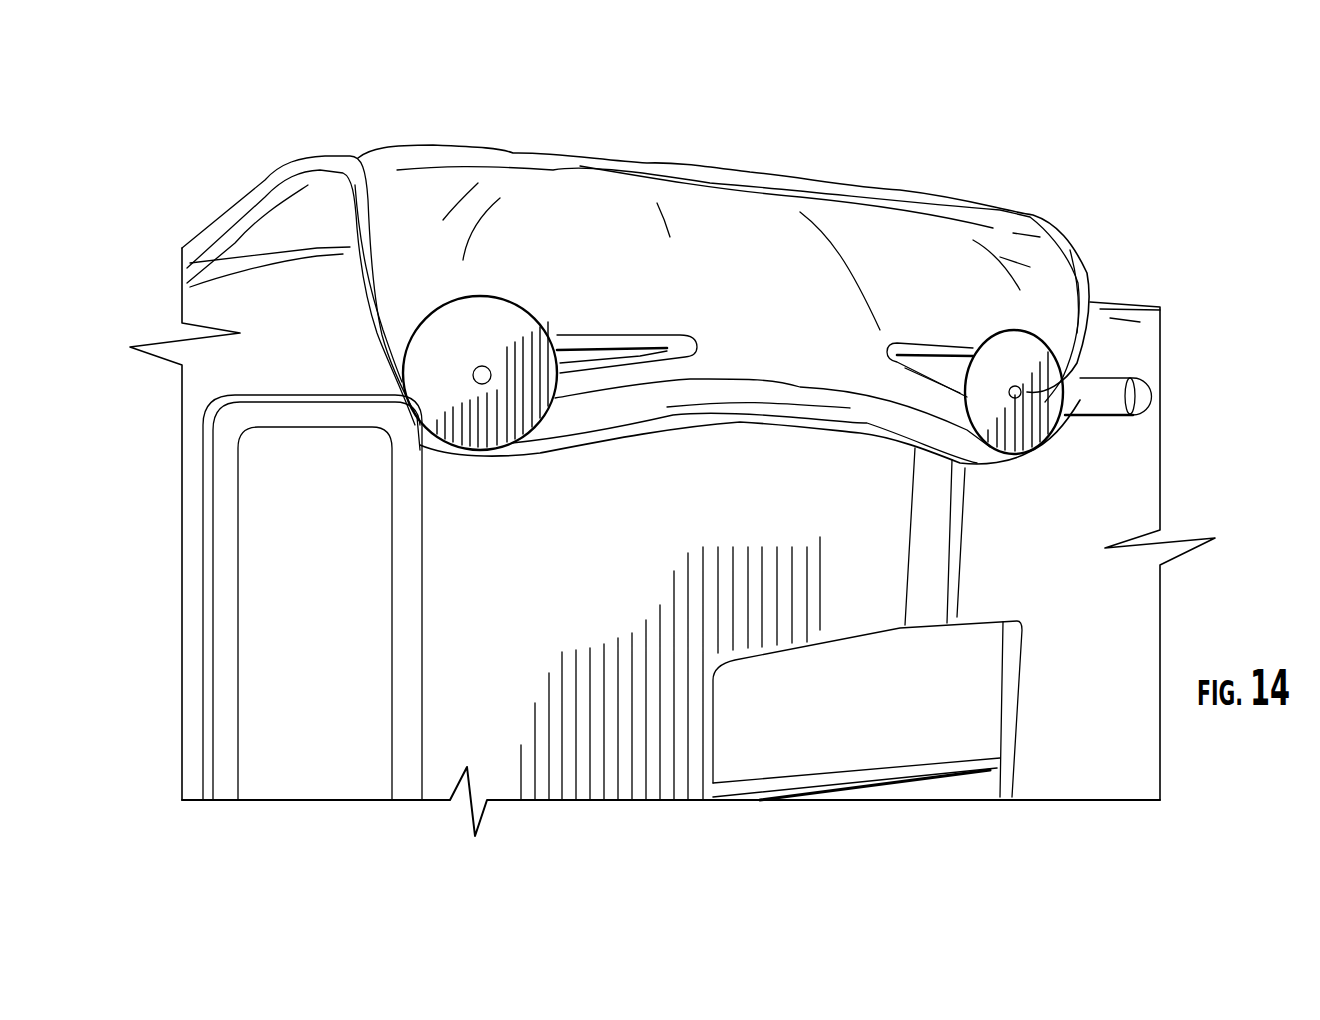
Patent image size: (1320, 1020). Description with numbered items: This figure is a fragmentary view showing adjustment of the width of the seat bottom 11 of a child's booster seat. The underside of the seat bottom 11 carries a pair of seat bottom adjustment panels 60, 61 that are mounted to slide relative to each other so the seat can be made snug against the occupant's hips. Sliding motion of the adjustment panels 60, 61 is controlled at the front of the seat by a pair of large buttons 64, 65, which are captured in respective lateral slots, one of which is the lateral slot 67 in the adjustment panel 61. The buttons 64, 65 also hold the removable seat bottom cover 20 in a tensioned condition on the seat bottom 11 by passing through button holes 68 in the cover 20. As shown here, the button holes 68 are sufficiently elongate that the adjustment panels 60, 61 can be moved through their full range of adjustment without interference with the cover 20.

The seat bottom 11 is at (213, 309).
The seat bottom cover 20 is at (762, 235).
The seat bottom adjustment panel 60 is at (435, 658).
The seat bottom adjustment panel 61 is at (1105, 487).
The button 64 is at (458, 320).
The button 65 is at (1018, 347).
The lateral slot 67 is at (1117, 390).
The button hole 68 is at (590, 353).